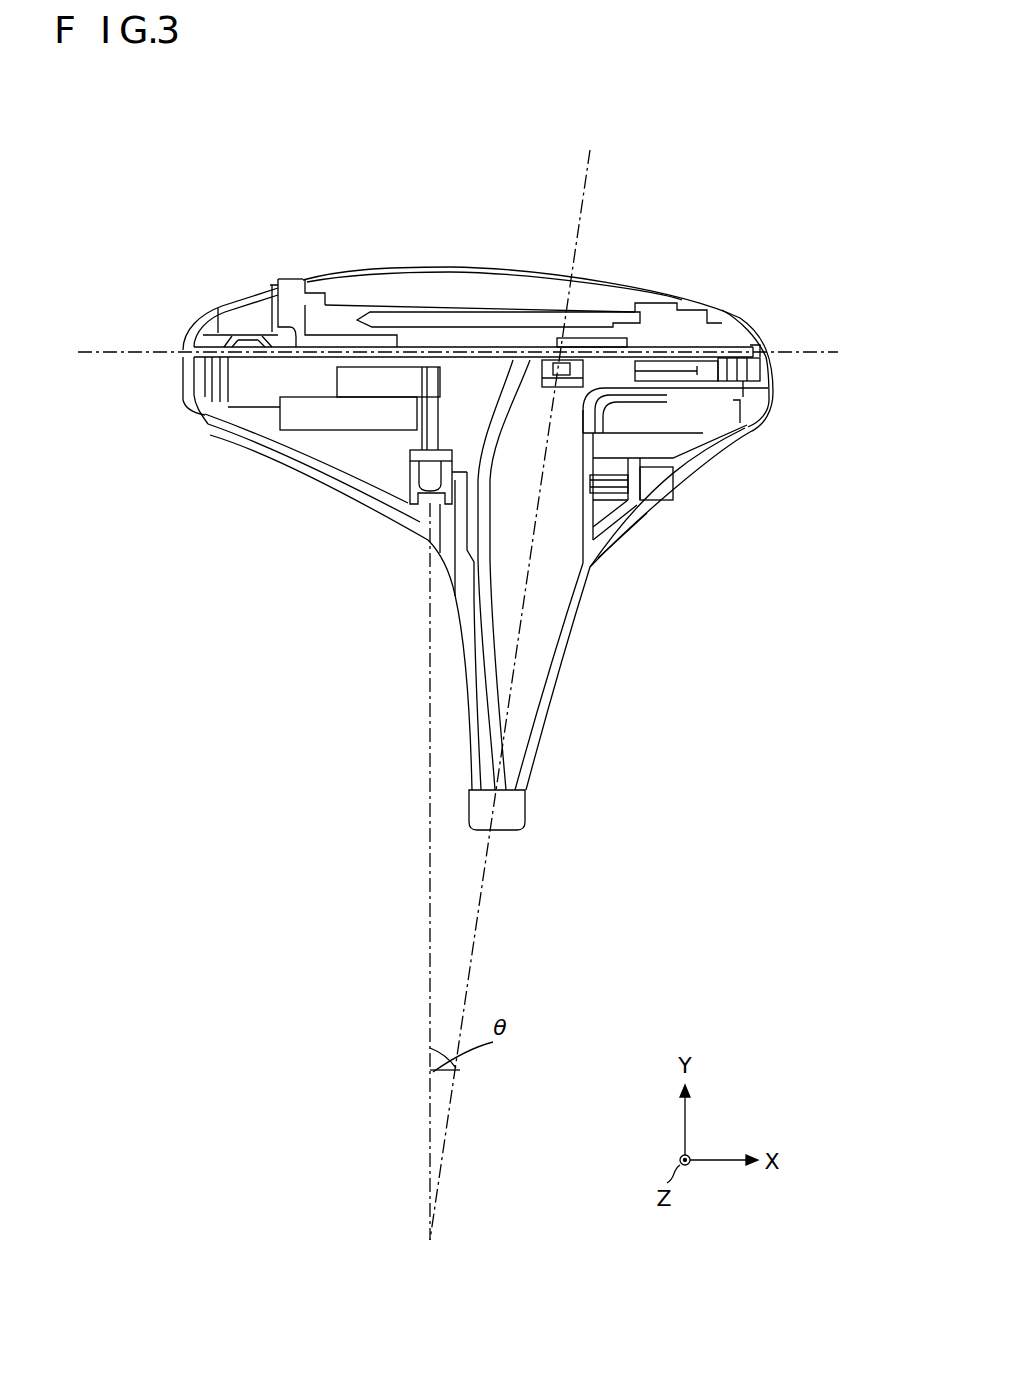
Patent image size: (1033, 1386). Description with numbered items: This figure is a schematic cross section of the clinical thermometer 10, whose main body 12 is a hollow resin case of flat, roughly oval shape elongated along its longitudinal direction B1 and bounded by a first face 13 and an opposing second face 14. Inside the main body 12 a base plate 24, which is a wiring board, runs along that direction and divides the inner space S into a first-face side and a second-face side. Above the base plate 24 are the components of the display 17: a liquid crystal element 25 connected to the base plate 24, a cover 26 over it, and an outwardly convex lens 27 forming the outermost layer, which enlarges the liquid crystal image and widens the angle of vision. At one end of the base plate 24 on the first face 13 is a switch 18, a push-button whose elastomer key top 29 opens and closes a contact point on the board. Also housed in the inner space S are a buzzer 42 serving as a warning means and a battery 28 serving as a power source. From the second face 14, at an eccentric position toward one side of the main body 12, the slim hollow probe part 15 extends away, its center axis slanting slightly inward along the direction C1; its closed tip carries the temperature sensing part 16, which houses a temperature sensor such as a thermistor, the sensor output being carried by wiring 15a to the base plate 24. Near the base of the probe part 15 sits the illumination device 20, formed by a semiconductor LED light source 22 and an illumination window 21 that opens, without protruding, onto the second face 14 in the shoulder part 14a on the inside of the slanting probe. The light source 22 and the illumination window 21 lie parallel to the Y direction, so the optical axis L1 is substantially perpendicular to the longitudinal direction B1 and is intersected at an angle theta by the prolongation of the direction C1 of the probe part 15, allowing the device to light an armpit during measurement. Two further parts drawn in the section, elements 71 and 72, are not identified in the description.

The clinical thermometer 10 is at (660, 180).
The main body 12 is at (745, 302).
The first face 13 is at (690, 297).
The second face 14 is at (263, 455).
The shoulder part 14a is at (433, 540).
The probe part 15 is at (547, 665).
The wiring 15a is at (490, 594).
The temperature sensing part 16 is at (524, 810).
The display 17 is at (330, 262).
The switch 18 is at (217, 294).
The illumination device 20 is at (407, 562).
The illumination window 21 is at (420, 518).
The light source 22 is at (426, 476).
The base plate 24 is at (260, 360).
The liquid crystal element 25 is at (540, 310).
The cover 26 is at (493, 303).
The lens 27 is at (403, 272).
The battery 28 is at (667, 380).
The key top 29 is at (262, 290).
The buzzer 42 is at (297, 415).
The arm lower wall 71 is at (307, 475).
The right wall block 72 is at (773, 413).
The inner space S is at (242, 375).
The longitudinal direction B1 is at (80, 358).
The optical axis L1 is at (430, 905).
The direction of the probe center axis C1 is at (478, 920).